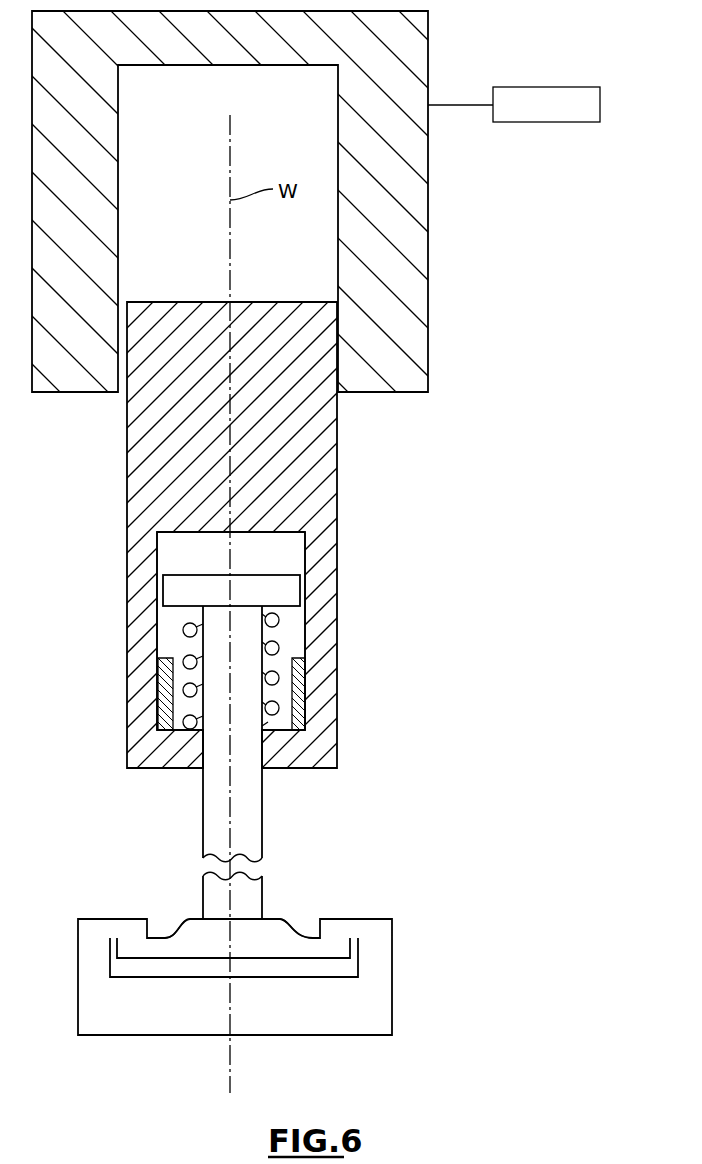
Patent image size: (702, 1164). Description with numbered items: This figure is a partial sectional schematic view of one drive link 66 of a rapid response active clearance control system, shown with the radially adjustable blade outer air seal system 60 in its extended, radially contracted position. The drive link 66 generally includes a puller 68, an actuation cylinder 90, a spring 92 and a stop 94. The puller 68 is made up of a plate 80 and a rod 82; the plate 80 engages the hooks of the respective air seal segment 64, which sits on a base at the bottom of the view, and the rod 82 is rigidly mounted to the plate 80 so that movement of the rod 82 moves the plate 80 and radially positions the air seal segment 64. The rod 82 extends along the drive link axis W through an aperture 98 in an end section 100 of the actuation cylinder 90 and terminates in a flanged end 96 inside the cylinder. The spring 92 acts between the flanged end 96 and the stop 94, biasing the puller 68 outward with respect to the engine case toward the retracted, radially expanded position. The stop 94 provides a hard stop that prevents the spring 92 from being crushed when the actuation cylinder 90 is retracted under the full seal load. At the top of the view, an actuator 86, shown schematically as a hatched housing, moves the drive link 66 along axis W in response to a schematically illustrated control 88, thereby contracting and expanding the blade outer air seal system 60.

The radially adjustable blade outer air seal system 60 is at (500, 963).
The air seal segment 64 is at (380, 1005).
The drive link 66 is at (508, 452).
The puller 68 is at (172, 864).
The plate 80 is at (273, 930).
The rod 82 is at (250, 830).
The actuator 86 is at (420, 330).
The control 88 is at (547, 122).
The actuation cylinder 90 is at (348, 660).
The spring 92 is at (280, 637).
The stop 94 is at (302, 707).
The flanged end 96 is at (287, 585).
The aperture 98 is at (195, 770).
The end section 100 is at (300, 770).